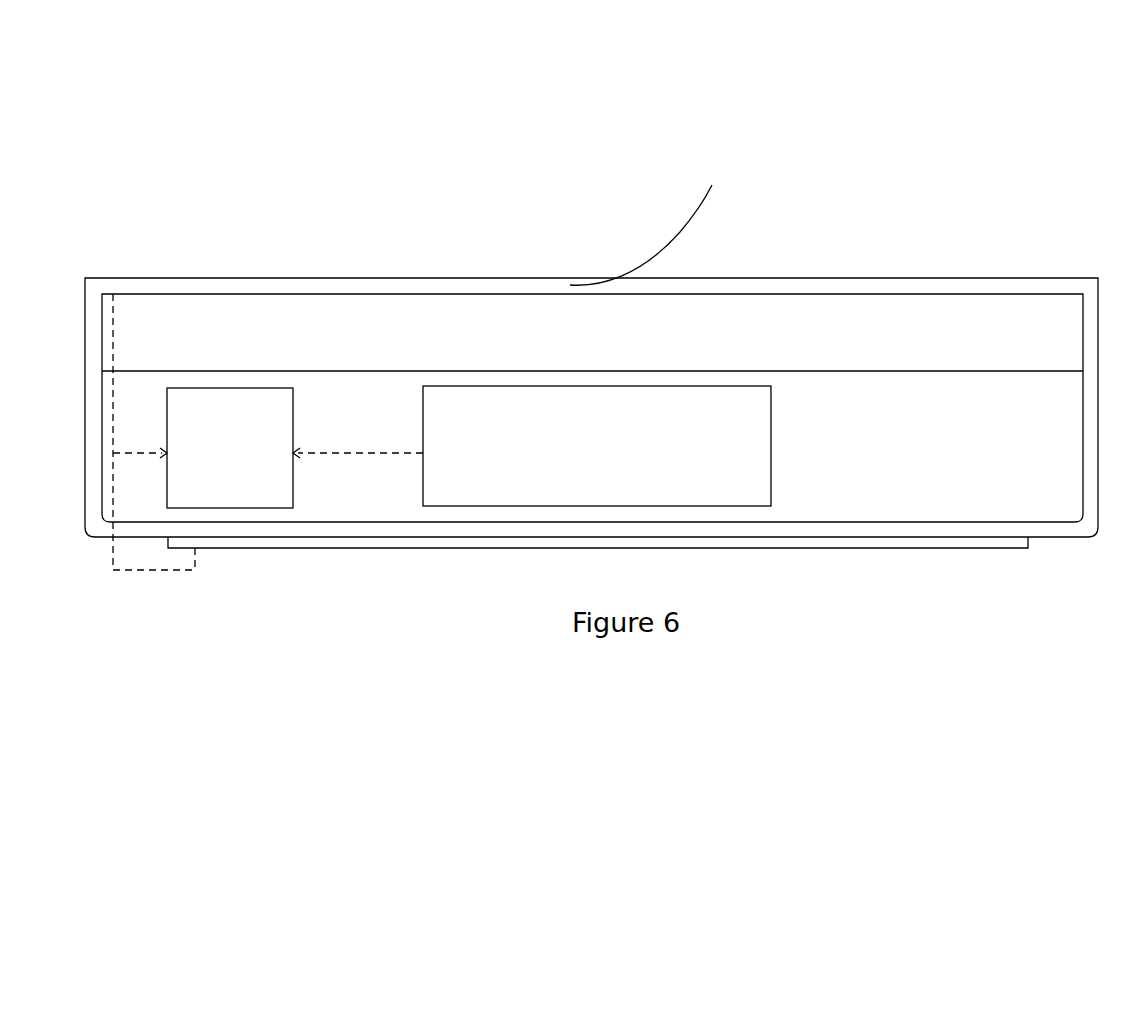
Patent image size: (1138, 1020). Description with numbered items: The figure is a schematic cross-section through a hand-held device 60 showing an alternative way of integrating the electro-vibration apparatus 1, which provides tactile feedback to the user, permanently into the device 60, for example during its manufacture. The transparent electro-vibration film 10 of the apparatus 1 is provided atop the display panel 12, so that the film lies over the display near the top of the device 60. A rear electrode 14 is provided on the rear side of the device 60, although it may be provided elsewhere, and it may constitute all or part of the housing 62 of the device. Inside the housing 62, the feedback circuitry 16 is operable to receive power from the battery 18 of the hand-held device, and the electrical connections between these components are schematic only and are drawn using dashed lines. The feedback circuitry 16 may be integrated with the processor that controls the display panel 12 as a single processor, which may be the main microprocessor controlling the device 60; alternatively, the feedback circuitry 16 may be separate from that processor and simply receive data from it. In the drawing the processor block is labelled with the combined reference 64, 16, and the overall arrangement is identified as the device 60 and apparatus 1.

The hand-held device 60 is at (610, 343).
The electro-vibration apparatus 1 is at (610, 343).
The transparent electro-vibration film 10 is at (644, 224).
The display panel 12 is at (823, 342).
The rear electrode 14 is at (982, 548).
The feedback circuitry 16 is at (240, 508).
The battery 18 is at (723, 457).
The housing 62 is at (1052, 525).
The processor unit 64 is at (244, 520).